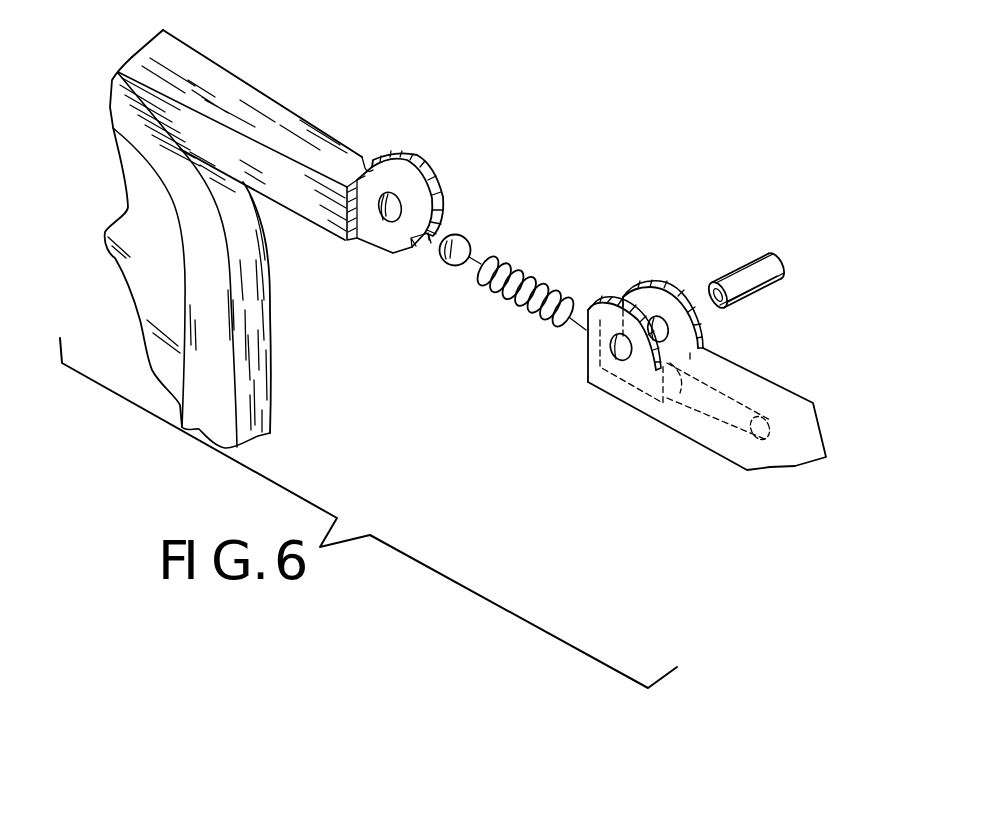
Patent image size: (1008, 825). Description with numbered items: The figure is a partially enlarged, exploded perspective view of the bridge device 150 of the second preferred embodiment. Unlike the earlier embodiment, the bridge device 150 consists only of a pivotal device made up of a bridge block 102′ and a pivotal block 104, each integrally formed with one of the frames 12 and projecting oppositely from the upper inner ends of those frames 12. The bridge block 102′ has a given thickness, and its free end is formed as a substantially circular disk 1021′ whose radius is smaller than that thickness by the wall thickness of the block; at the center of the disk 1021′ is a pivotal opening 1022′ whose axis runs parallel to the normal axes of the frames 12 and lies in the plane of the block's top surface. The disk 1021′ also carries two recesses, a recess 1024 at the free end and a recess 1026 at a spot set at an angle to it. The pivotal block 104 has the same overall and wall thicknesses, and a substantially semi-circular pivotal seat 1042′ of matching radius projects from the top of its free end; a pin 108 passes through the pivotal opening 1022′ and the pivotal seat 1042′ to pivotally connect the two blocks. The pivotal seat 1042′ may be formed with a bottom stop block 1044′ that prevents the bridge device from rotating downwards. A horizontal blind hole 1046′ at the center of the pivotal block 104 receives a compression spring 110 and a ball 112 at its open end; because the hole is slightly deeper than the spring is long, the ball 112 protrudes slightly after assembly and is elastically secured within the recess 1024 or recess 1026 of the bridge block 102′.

The frame 12 is at (272, 313).
The bridge block 102′ is at (248, 92).
The circular disk 1021′ is at (435, 197).
The pivotal opening 1022′ is at (387, 216).
The recess 1024 is at (418, 250).
The recess 1026 is at (370, 162).
The pivotal block 104 is at (790, 420).
The pivotal seat 1042′ is at (603, 328).
The bottom stop block 1044′ is at (635, 382).
The blind hole 1046′ is at (725, 418).
The pin 108 is at (763, 292).
The compression spring 110 is at (508, 304).
The ball 112 is at (457, 265).
The bridge device 150 is at (649, 166).